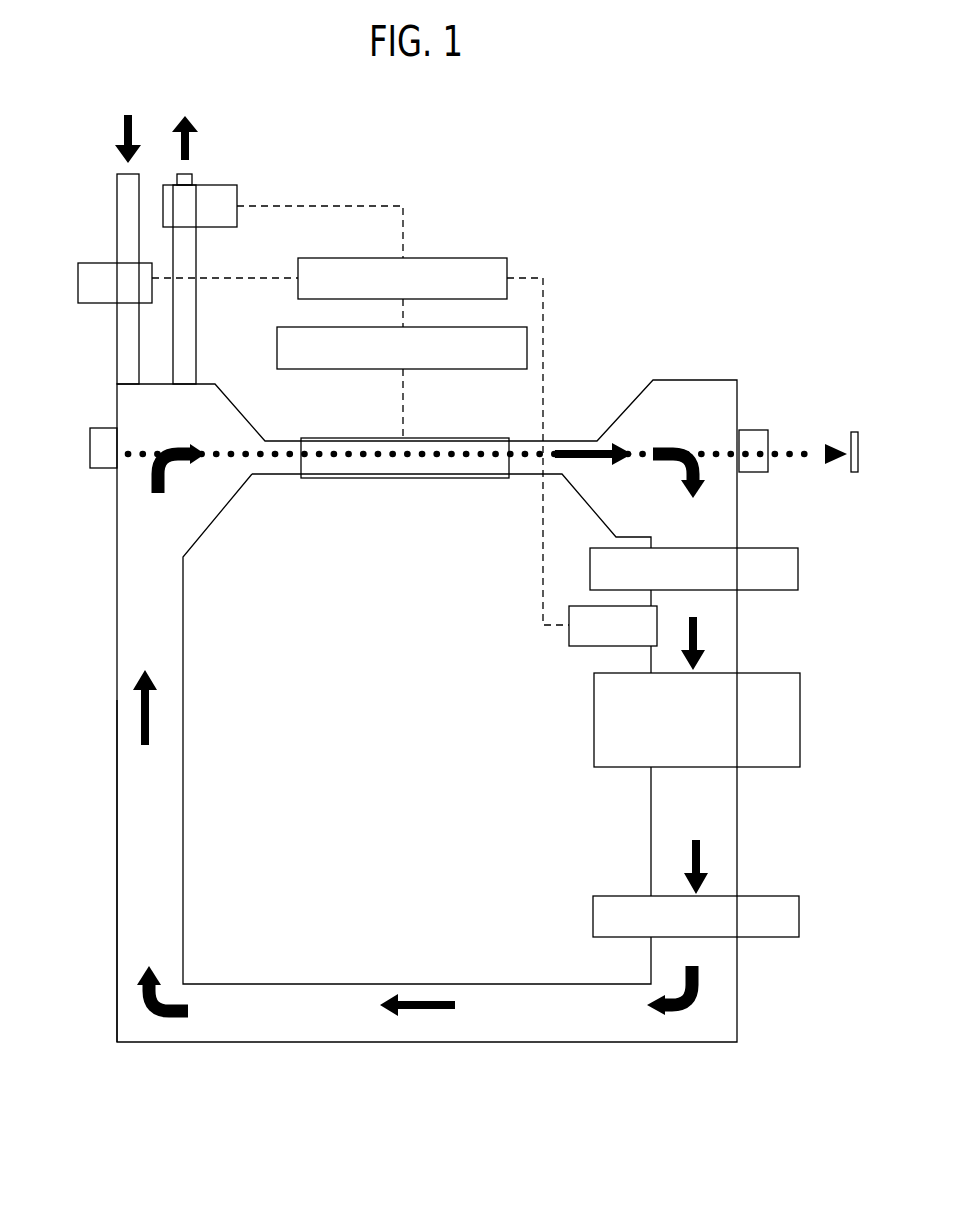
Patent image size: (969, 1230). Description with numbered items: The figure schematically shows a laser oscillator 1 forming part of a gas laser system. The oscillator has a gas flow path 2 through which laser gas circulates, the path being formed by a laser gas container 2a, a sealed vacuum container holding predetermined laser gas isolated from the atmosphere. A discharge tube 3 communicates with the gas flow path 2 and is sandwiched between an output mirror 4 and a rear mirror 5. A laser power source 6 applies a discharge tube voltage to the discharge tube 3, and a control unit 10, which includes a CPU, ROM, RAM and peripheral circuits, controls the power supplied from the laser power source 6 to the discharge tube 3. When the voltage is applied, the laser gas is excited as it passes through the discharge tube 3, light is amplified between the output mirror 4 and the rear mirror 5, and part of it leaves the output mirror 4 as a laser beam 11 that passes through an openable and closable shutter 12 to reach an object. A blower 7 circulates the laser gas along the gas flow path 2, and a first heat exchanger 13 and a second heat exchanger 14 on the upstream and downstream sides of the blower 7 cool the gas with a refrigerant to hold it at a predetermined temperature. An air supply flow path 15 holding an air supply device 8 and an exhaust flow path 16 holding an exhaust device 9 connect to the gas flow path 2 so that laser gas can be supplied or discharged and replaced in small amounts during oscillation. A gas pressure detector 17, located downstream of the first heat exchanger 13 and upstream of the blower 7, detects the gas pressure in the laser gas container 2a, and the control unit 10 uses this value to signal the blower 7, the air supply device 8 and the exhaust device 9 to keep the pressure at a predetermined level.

The laser oscillator 1 is at (662, 170).
The gas flow path 2 is at (141, 620).
The laser gas container 2a is at (118, 836).
The discharge tube 3 is at (357, 465).
The output mirror 4 is at (758, 430).
The rear mirror 5 is at (100, 469).
The laser power source 6 is at (440, 369).
The blower 7 is at (800, 717).
The air supply device 8 is at (78, 282).
The exhaust device 9 is at (215, 185).
The control unit 10 is at (460, 258).
The laser beam 11 is at (799, 446).
The shutter 12 is at (853, 432).
The first heat exchanger 13 is at (798, 570).
The second heat exchanger 14 is at (799, 916).
The air supply flow path 15 is at (122, 355).
The exhaust flow path 16 is at (197, 257).
The gas pressure detector 17 is at (586, 646).